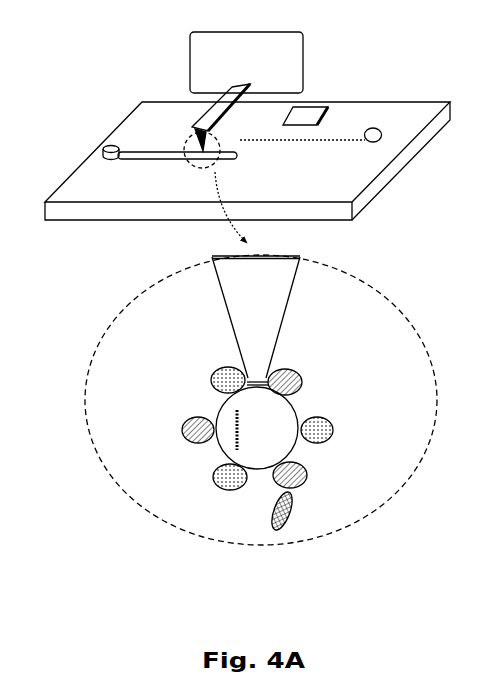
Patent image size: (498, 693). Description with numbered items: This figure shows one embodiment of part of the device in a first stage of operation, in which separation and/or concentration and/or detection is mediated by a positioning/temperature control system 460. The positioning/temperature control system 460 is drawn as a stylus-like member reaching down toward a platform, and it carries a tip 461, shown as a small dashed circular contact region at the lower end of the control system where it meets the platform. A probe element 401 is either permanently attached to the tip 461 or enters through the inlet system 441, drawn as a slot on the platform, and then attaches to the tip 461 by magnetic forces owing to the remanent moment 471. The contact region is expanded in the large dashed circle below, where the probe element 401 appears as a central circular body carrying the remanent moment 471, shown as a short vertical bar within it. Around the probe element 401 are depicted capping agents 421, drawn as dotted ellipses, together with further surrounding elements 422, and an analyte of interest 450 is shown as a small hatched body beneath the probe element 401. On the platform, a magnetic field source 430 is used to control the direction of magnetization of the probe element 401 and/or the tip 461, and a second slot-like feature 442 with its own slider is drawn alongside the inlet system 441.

The probe element 401 is at (257, 428).
The capping agents 421 is at (216, 491).
The second type sensor elements (hatched) 422 is at (306, 387).
The magnetic field source 430 is at (313, 108).
The inlet system 441 is at (105, 146).
The slider knob and rail 442 is at (388, 141).
The analyte of interest 450 is at (297, 512).
The positioning/temperature control system 460 is at (227, 109).
The tip 461 is at (192, 146).
The remanent moment 471 is at (253, 430).